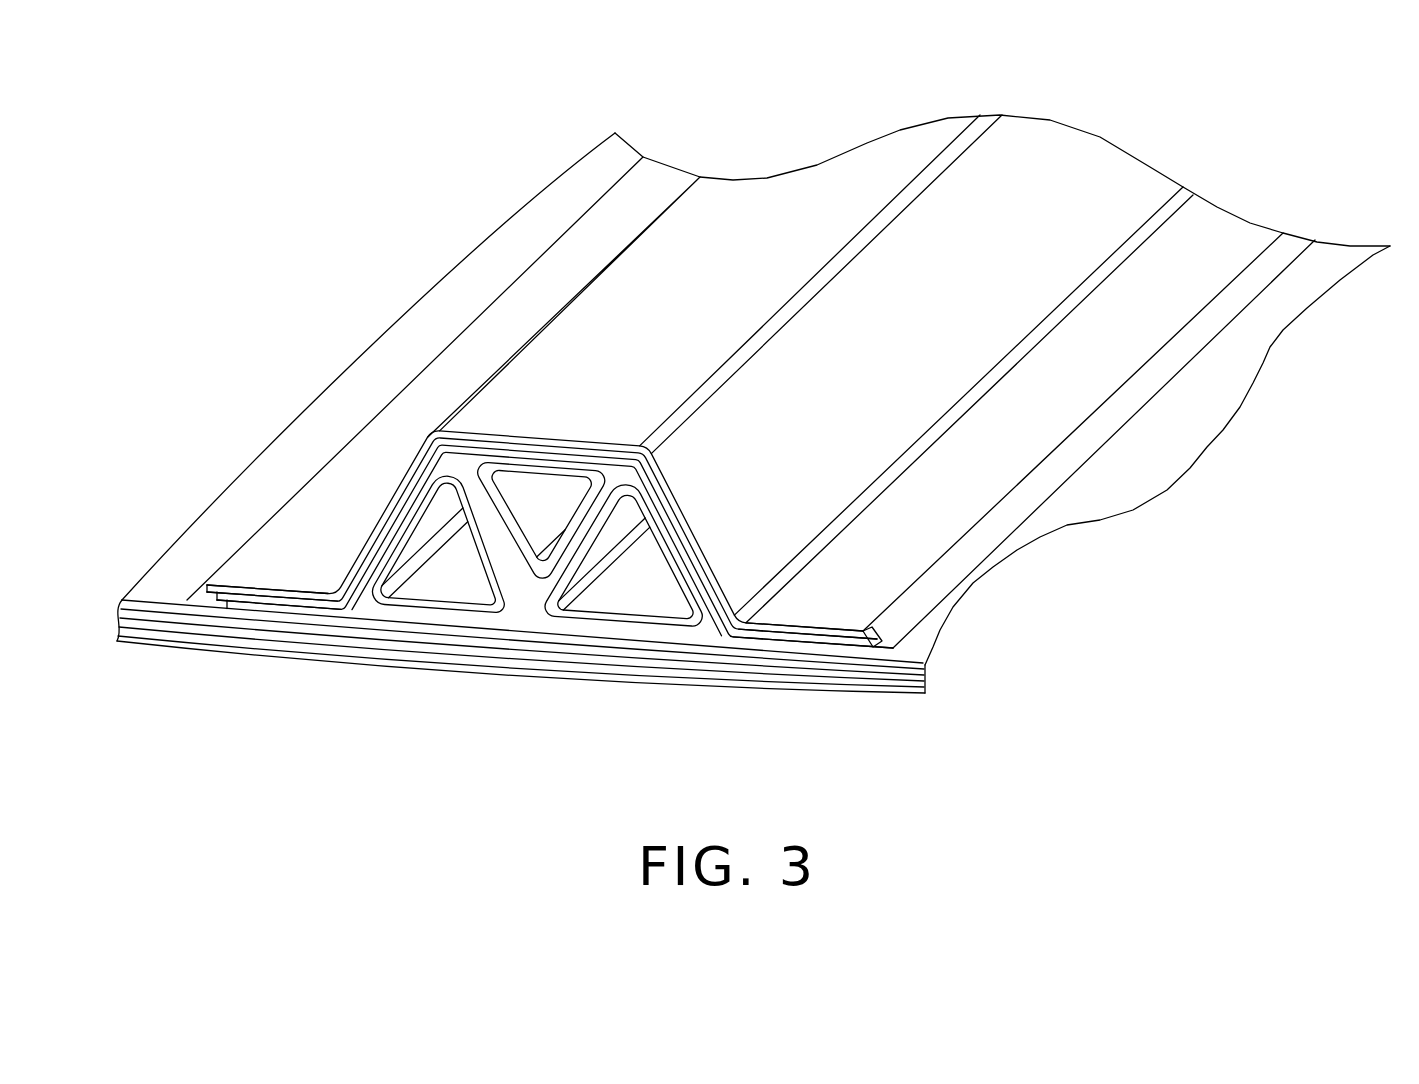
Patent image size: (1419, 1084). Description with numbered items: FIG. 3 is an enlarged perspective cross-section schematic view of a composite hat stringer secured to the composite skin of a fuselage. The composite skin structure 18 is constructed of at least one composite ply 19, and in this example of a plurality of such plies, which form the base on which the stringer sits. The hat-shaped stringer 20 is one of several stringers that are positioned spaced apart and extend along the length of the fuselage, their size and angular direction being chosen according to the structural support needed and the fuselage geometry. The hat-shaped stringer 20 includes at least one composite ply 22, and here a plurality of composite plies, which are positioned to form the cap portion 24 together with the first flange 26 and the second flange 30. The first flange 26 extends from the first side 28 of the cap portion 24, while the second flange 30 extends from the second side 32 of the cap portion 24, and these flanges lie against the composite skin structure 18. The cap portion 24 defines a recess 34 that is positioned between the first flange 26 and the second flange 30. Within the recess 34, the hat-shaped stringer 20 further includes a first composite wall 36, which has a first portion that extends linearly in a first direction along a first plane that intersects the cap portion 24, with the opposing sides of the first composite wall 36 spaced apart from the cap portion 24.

The composite skin structure 18 is at (818, 690).
The composite ply 19 is at (913, 677).
The hat-shaped stringer 20 is at (683, 333).
The composite ply 22 is at (628, 450).
The cap portion 24 is at (490, 420).
The first flange 26 is at (863, 593).
The first side 28 is at (787, 532).
The second flange 30 is at (280, 553).
The second side 32 is at (380, 510).
The recess 34 is at (610, 577).
The first composite wall 36 is at (600, 530).